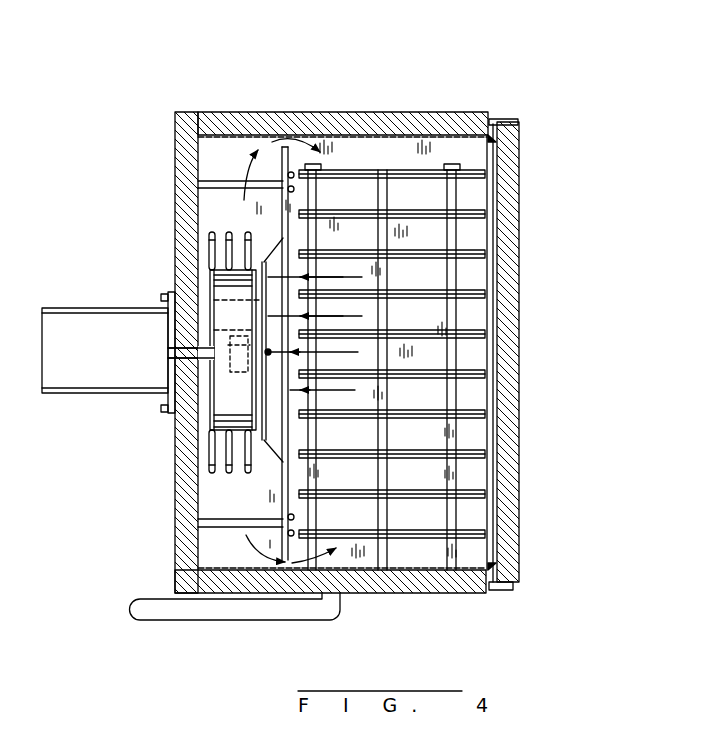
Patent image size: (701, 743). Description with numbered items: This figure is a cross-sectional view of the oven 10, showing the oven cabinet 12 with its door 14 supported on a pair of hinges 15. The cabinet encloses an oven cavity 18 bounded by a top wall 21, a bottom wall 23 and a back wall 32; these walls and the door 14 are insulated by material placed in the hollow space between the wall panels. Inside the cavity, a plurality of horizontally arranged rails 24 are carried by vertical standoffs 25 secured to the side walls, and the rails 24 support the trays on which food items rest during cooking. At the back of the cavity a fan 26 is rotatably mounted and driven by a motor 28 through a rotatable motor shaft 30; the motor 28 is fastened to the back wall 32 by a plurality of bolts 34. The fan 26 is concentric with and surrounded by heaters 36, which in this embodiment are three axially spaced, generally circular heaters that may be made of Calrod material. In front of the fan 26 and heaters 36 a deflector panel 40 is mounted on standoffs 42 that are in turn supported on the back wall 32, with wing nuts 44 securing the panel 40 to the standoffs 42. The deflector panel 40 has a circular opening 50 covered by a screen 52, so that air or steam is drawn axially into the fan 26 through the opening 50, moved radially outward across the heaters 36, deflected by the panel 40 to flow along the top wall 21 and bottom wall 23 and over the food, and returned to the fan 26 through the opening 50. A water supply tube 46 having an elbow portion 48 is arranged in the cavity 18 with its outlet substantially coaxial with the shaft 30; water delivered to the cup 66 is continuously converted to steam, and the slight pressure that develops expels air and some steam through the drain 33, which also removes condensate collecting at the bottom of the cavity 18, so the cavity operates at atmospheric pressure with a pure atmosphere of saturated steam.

The oven 10 is at (381, 323).
The oven cabinet 12 is at (398, 112).
The door 14 is at (519, 145).
The hinges 15 is at (512, 119).
The oven cavity 18 is at (470, 149).
The top wall 21 is at (398, 131).
The bottom wall 23 is at (386, 568).
The rails 24 is at (485, 292).
The vertical standoffs 25 is at (316, 482).
The fan 26 is at (218, 300).
The motor 28 is at (78, 356).
The motor shaft 30 is at (178, 353).
The back wall 32 is at (175, 504).
The drain 33 is at (138, 610).
The bolts 34 is at (161, 297).
The heaters 36 is at (248, 232).
The deflector panel 40 is at (273, 150).
The standoffs 42 is at (209, 181).
The wing nuts 44 is at (292, 187).
The water supply tube 46 is at (268, 356).
The elbow portion 48 is at (233, 366).
The circular opening 50 is at (264, 303).
The screen 52 is at (268, 428).
The cup 66 is at (233, 318).